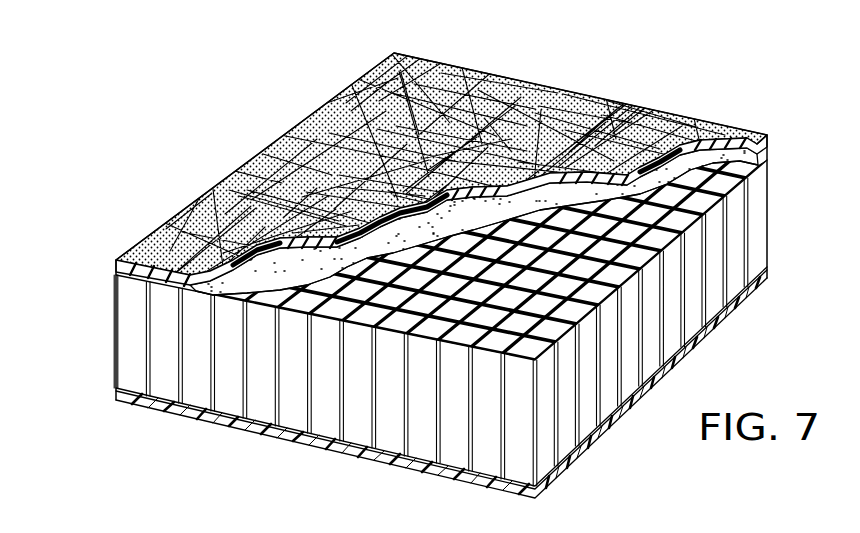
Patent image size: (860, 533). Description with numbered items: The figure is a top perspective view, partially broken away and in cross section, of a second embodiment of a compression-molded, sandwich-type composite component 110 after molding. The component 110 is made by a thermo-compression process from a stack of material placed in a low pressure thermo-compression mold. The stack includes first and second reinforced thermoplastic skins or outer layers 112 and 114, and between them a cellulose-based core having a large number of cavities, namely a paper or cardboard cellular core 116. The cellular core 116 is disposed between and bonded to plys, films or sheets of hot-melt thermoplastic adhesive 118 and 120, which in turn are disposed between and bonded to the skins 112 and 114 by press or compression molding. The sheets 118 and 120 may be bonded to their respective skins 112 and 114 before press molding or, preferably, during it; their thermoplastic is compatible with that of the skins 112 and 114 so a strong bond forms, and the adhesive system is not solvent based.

The compression-molded, sandwich-type composite component 110 is at (633, 49).
The first reinforced thermoplastic skin 112 is at (115, 262).
The second reinforced thermoplastic skin 114 is at (117, 400).
The cellular core 116 is at (115, 343).
The sheet of hot-melt adhesive 118 is at (272, 277).
The sheet of hot-melt adhesive 120 is at (115, 382).